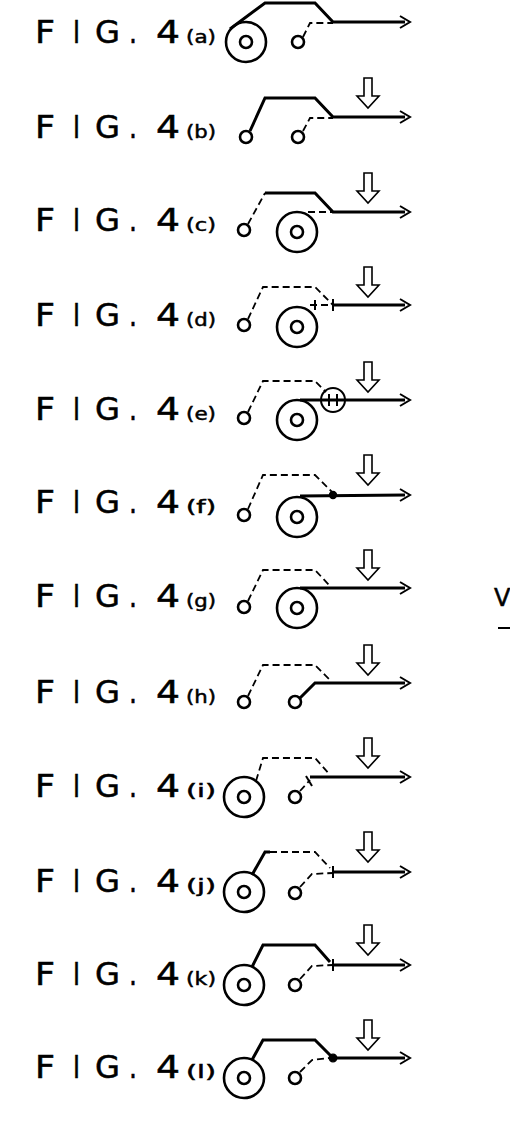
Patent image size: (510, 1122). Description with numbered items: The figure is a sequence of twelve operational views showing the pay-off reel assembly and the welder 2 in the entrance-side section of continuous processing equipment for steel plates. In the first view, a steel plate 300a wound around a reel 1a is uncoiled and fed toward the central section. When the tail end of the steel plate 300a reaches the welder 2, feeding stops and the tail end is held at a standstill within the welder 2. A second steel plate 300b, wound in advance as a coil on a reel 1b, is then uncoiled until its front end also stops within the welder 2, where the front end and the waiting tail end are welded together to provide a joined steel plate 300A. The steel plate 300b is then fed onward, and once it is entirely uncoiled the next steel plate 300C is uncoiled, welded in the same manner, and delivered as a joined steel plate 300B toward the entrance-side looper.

In FIG. 4A, the steel plate 300a is at (231, 56).
In FIG. 4B, the steel plate 300a is at (384, 118).
In FIG. 4C, the steel plate 300a is at (386, 212).
In FIG. 4D, the steel plate 300a is at (388, 305).
In FIG. 4E, the steel plate 300a is at (390, 400).
In FIG. 4F, the steel plate 300a is at (388, 495).
In FIG. 4A, the reel 1a is at (251, 46).
In FIG. 4A, the reel 1b is at (300, 48).
In FIG. 4C, the steel plate 300b is at (317, 233).
In FIG. 4D, the steel plate 300b is at (317, 328).
In FIG. 4E, the steel plate 300b is at (281, 429).
In FIG. 4F, the steel plate 300b is at (281, 526).
In FIG. 4E, the welder 2 is at (340, 410).
In FIG. 4G, the joined steel plate 300A is at (385, 588).
In FIG. 4H, the joined steel plate 300A is at (385, 683).
In FIG. 4I, the joined steel plate 300A is at (384, 777).
In FIG. 4J, the joined steel plate 300A is at (384, 872).
In FIG. 4K, the joined steel plate 300A is at (385, 965).
In FIG. 4I, the steel plate 300C is at (226, 806).
In FIG. 4J, the steel plate 300C is at (228, 898).
In FIG. 4K, the steel plate 300C is at (236, 1003).
In FIG. 4L, the joined steel plate 300B is at (326, 1046).